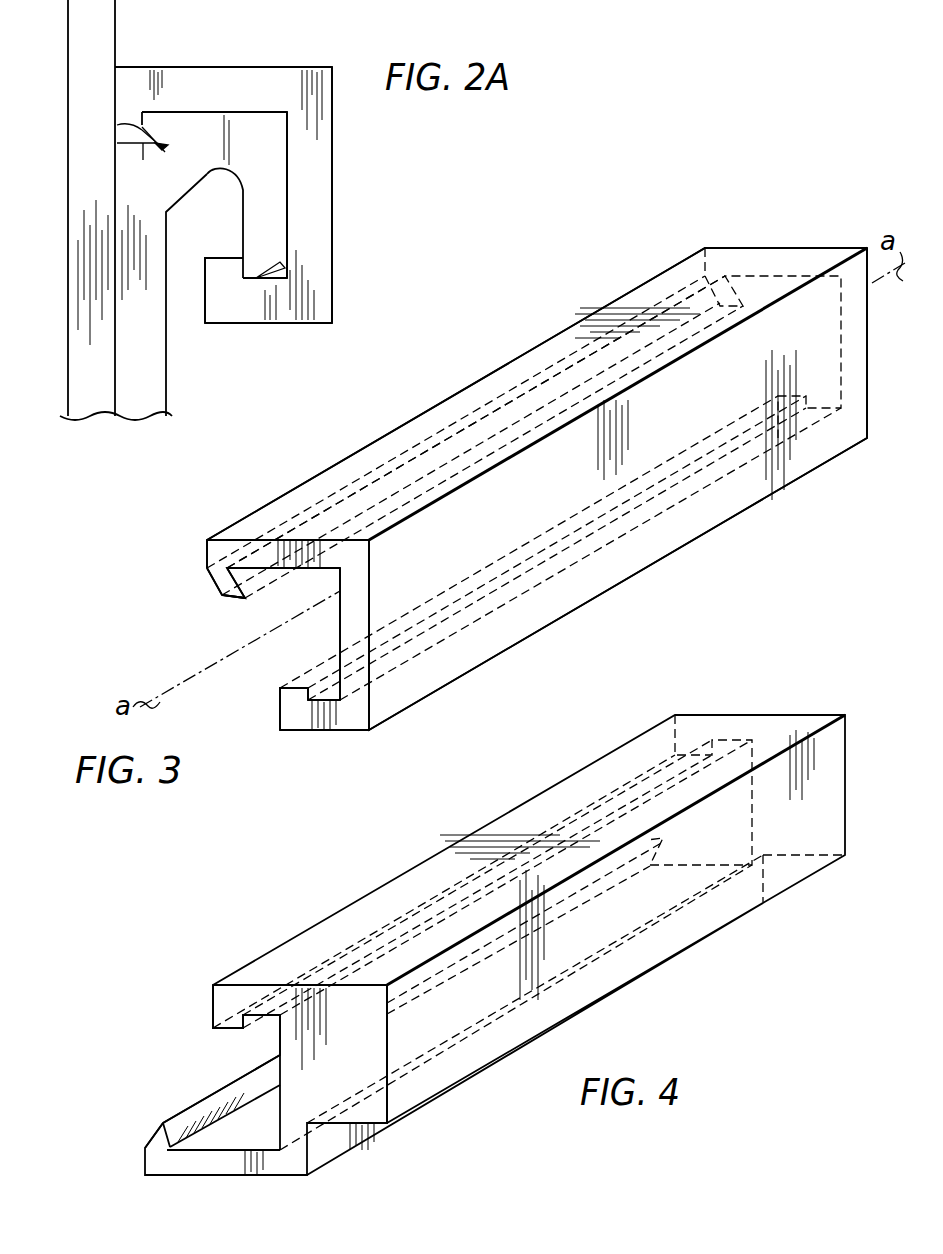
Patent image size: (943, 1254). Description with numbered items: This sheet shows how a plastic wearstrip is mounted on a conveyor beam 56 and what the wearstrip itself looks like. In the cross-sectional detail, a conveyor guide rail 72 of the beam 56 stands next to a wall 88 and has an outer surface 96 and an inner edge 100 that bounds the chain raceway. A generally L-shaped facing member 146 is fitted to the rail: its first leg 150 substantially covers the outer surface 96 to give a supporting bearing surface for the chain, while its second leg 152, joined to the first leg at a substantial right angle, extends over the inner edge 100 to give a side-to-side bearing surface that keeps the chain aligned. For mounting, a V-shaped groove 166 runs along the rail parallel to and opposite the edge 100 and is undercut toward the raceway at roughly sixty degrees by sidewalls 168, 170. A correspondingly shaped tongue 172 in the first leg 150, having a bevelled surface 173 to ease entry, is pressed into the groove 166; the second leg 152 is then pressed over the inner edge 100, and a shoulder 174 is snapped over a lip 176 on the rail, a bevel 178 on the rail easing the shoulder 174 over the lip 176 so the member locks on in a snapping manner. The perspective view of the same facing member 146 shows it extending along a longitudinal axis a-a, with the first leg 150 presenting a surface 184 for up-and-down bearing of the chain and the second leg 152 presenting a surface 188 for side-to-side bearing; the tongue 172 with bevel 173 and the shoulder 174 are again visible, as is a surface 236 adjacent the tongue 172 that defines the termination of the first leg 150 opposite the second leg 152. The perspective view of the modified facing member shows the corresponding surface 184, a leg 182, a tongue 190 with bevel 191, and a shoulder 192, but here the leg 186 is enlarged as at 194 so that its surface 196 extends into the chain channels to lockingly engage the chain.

In FIG. 2A, the wall 88 is at (103, 44).
In FIG. 2A, the beam 56 is at (153, 334).
In FIG. 2A, the conveyor guide rail 72 is at (170, 172).
In FIG. 2A, the facing member 146 is at (300, 80).
In FIG. 3, the facing member 146 is at (708, 417).
In FIG. 2A, the first leg 150 is at (216, 99).
In FIG. 3, the first leg 150 is at (395, 490).
In FIG. 2A, the outer surface 96 is at (238, 116).
In FIG. 2A, the second leg 152 is at (303, 164).
In FIG. 3, the second leg 152 is at (425, 568).
In FIG. 2A, the inner edge 100 is at (283, 210).
In FIG. 2A, the lip 176 is at (263, 247).
In FIG. 2A, the bevel 178 is at (258, 268).
In FIG. 2A, the shoulder 174 is at (218, 282).
In FIG. 3, the shoulder 174 is at (295, 700).
In FIG. 2A, the sidewall 170 is at (150, 125).
In FIG. 2A, the tongue 172 is at (132, 158).
In FIG. 3, the tongue 172 is at (230, 580).
In FIG. 2A, the bevelled surface 173 is at (142, 127).
In FIG. 3, the bevelled surface 173 is at (212, 594).
In FIG. 2A, the V-shaped groove 166 is at (168, 152).
In FIG. 2A, the sidewall 168 is at (143, 160).
In FIG. 3, the surface 184 is at (540, 400).
In FIG. 4, the surface 184 is at (222, 1177).
In FIG. 3, the surface 188 is at (510, 532).
In FIG. 3, the surface 236 is at (207, 555).
In FIG. 4, the surface 196 is at (652, 919).
In FIG. 4, the leg 186 is at (352, 1094).
In FIG. 4, the shoulder 192 is at (240, 1022).
In FIG. 4, the enlargement 194 is at (372, 1050).
In FIG. 4, the tongue 190 is at (163, 1133).
In FIG. 4, the bevel 191 is at (145, 1142).
In FIG. 4, the leg 182 is at (210, 1158).